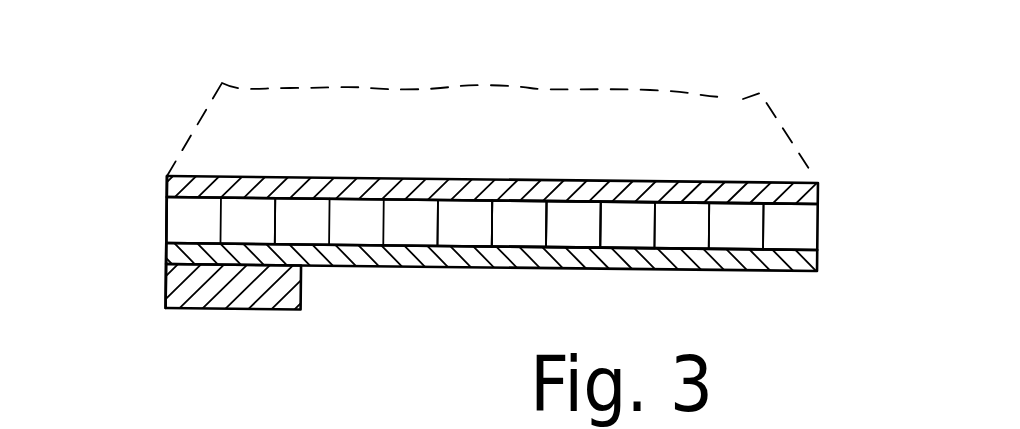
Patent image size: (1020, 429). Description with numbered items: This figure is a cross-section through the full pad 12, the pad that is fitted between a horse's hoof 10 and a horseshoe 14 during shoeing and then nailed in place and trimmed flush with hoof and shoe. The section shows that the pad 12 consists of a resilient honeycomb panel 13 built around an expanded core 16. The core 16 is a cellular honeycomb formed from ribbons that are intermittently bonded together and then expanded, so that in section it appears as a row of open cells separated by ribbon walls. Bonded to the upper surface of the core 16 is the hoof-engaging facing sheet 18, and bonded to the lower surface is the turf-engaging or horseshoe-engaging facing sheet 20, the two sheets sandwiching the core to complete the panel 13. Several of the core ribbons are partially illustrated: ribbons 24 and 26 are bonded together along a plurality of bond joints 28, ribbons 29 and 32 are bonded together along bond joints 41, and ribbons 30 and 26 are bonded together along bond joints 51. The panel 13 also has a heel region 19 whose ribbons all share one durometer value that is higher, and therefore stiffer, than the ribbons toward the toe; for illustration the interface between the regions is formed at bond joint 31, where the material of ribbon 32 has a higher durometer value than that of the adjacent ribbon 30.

The hoof 10 is at (695, 100).
The full pad 12 is at (157, 221).
The honeycomb panel 13 is at (819, 223).
The horseshoe 14 is at (197, 308).
The expanded core 16 is at (737, 228).
The hoof-engaging facing sheet 18 is at (783, 182).
The heel region 19 is at (297, 177).
The turf-engaging facing sheet 20 is at (802, 270).
The ribbon 24 is at (409, 213).
The ribbon 26 is at (465, 213).
The bond joints 28 is at (438, 234).
The ribbon 29 is at (628, 213).
The ribbon 30 is at (520, 213).
The bond joint 31 is at (547, 234).
The ribbon 32 is at (573, 213).
The bond joints 41 is at (602, 234).
The bond joints 51 is at (492, 234).